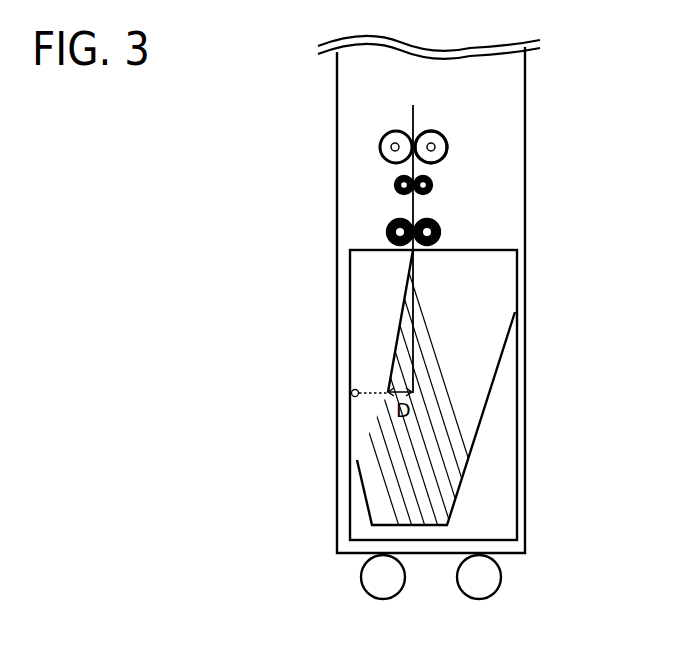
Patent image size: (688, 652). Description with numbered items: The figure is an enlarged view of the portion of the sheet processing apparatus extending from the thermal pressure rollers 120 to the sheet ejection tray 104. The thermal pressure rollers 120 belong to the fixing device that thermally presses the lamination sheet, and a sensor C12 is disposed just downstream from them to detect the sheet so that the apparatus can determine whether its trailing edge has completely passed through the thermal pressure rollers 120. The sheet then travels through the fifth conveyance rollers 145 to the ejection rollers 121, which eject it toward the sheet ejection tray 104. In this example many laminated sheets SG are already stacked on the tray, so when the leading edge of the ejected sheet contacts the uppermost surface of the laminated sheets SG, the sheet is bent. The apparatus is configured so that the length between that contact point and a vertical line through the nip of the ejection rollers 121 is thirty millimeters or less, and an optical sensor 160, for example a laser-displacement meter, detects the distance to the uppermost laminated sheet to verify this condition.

The thermal pressure rollers 120 is at (392, 149).
The sensor C12 is at (440, 166).
The fifth conveyance rollers 145 is at (434, 186).
The ejection rollers 121 is at (390, 238).
The optical sensor 160 is at (354, 390).
The laminated sheets SG is at (371, 447).
The sheet ejection tray 104 is at (487, 396).